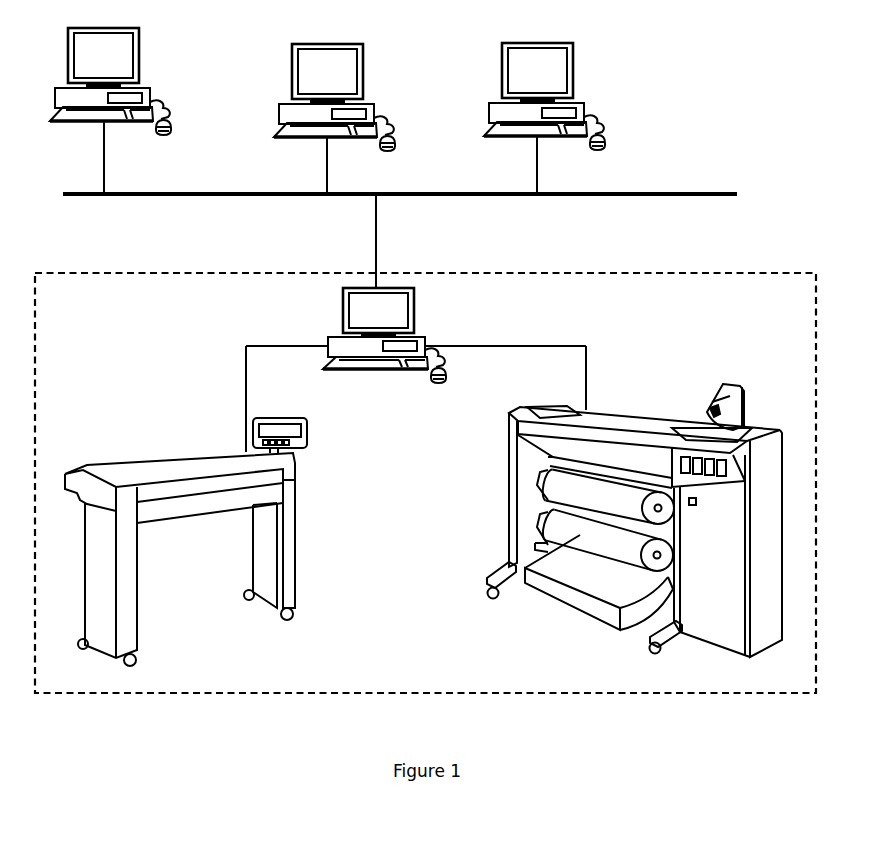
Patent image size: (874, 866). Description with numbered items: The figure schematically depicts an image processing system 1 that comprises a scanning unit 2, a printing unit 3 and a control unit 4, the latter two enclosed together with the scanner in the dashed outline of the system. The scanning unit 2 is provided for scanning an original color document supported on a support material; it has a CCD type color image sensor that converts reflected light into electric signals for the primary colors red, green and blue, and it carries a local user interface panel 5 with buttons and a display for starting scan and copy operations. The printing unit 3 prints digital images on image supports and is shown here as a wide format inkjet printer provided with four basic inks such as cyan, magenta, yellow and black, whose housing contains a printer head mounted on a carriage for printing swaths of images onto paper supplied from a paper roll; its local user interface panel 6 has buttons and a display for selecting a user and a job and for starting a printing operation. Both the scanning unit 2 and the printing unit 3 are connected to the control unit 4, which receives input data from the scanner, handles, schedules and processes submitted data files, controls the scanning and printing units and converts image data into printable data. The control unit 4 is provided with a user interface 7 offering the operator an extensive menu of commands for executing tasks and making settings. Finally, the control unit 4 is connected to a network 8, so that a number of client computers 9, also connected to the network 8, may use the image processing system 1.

The image processing system 1 is at (52, 272).
The scanning unit 2 is at (160, 458).
The printing unit 3 is at (768, 457).
The control unit 4 is at (381, 335).
The local user interface panel 5 is at (307, 434).
The local user interface panel 6 is at (720, 393).
The user interface 7 is at (344, 302).
The network 8 is at (733, 196).
The client computers 9 is at (147, 83).